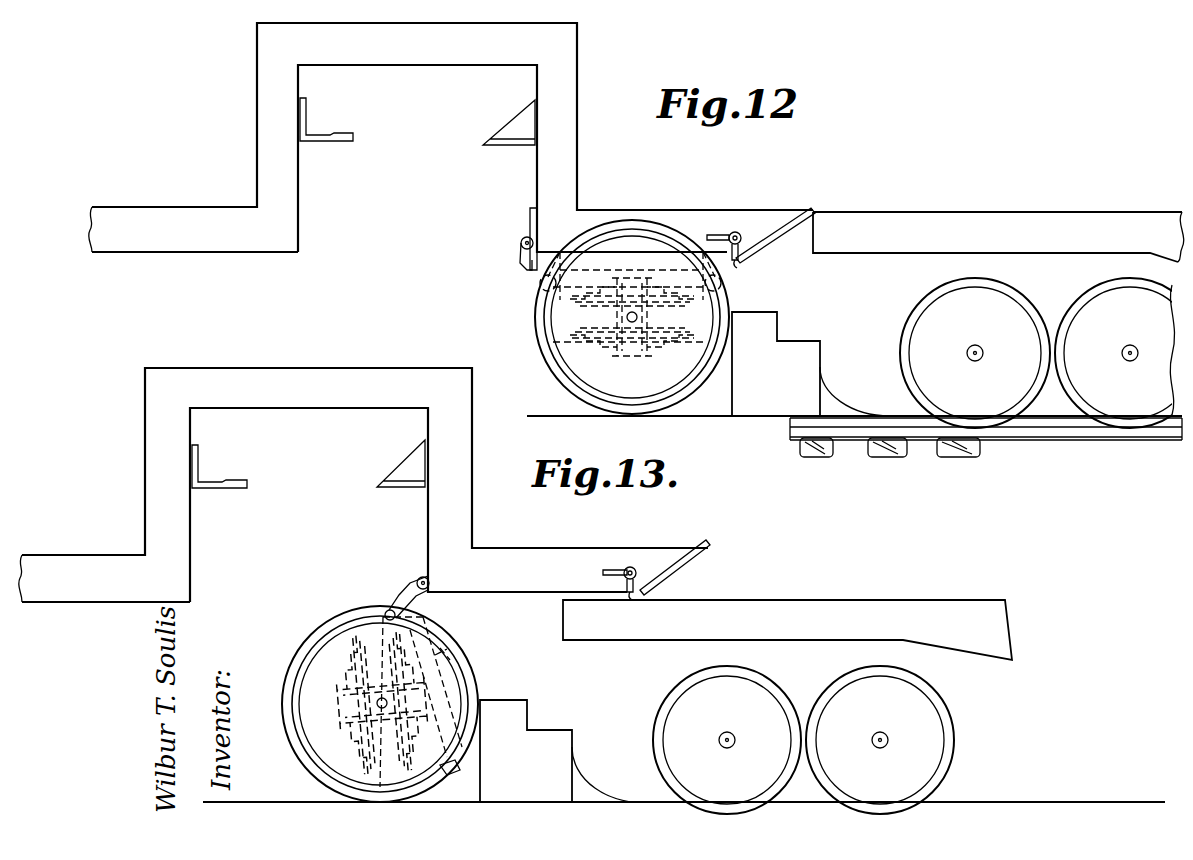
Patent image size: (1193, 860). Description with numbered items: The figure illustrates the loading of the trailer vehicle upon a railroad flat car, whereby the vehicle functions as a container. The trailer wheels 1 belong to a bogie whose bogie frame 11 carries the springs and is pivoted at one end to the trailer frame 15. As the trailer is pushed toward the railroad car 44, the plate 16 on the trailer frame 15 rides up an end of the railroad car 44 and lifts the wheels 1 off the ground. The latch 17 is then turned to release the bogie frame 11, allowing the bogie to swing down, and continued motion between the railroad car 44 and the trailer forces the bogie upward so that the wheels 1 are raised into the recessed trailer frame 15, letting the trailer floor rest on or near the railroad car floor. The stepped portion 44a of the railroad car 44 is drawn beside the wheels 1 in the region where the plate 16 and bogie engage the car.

In FIG. 12, the trailer wheels 1 is at (560, 322).
In FIG. 13, the trailer wheels 1 is at (362, 642).
In FIG. 12, the bogie frame 11 is at (640, 260).
In FIG. 13, the bogie frame 11 is at (450, 650).
In FIG. 12, the trailer frame 15 is at (262, 132).
In FIG. 13, the trailer frame 15 is at (157, 477).
In FIG. 12, the plate 16 is at (793, 228).
In FIG. 13, the plate 16 is at (692, 563).
In FIG. 12, the latch 17 is at (740, 262).
In FIG. 13, the latch 17 is at (632, 598).
In FIG. 12, the railroad car 44 is at (1135, 222).
In FIG. 13, the railroad car 44 is at (978, 613).
In FIG. 12, the stepped block 44a is at (767, 330).
In FIG. 13, the stepped block 44a is at (510, 707).